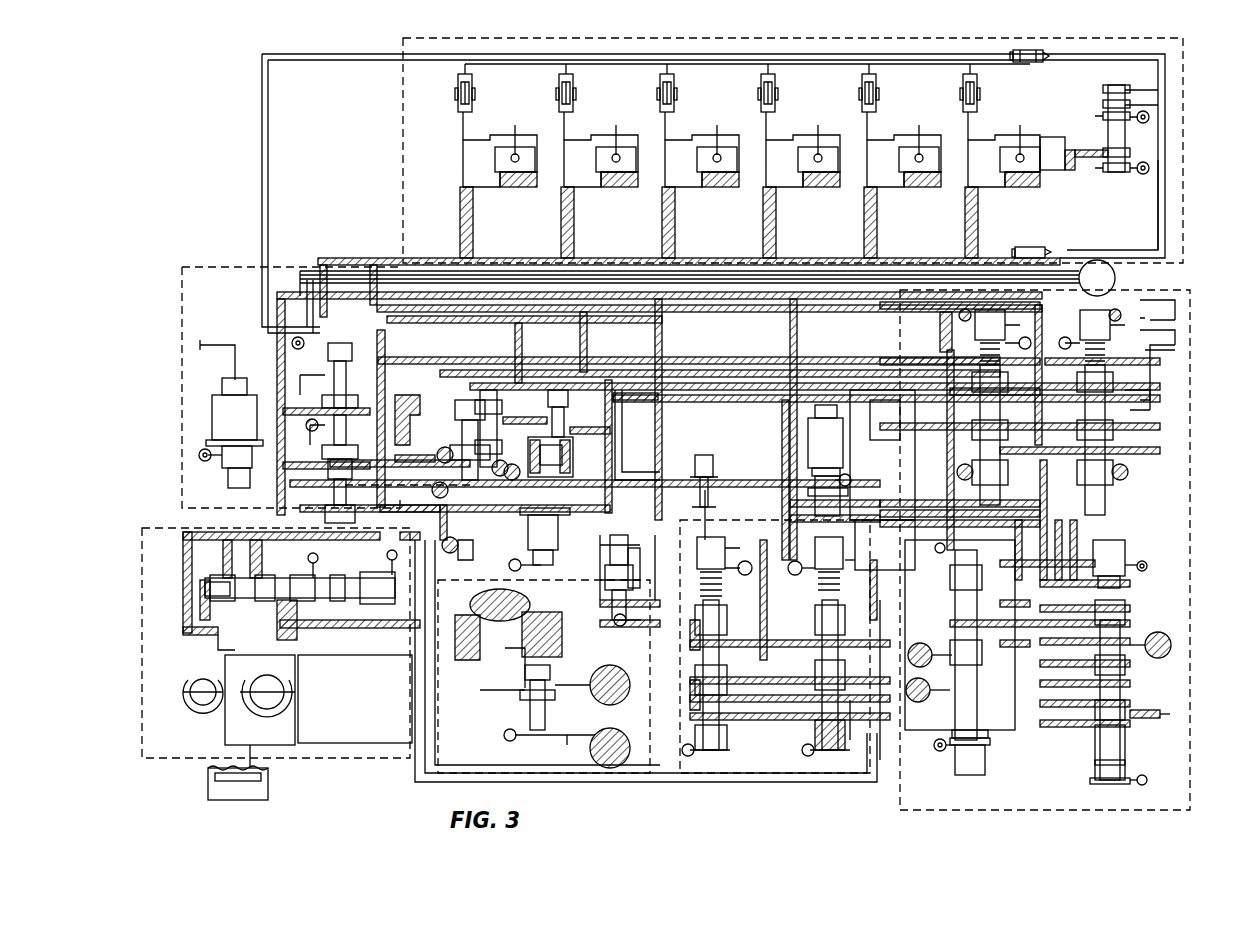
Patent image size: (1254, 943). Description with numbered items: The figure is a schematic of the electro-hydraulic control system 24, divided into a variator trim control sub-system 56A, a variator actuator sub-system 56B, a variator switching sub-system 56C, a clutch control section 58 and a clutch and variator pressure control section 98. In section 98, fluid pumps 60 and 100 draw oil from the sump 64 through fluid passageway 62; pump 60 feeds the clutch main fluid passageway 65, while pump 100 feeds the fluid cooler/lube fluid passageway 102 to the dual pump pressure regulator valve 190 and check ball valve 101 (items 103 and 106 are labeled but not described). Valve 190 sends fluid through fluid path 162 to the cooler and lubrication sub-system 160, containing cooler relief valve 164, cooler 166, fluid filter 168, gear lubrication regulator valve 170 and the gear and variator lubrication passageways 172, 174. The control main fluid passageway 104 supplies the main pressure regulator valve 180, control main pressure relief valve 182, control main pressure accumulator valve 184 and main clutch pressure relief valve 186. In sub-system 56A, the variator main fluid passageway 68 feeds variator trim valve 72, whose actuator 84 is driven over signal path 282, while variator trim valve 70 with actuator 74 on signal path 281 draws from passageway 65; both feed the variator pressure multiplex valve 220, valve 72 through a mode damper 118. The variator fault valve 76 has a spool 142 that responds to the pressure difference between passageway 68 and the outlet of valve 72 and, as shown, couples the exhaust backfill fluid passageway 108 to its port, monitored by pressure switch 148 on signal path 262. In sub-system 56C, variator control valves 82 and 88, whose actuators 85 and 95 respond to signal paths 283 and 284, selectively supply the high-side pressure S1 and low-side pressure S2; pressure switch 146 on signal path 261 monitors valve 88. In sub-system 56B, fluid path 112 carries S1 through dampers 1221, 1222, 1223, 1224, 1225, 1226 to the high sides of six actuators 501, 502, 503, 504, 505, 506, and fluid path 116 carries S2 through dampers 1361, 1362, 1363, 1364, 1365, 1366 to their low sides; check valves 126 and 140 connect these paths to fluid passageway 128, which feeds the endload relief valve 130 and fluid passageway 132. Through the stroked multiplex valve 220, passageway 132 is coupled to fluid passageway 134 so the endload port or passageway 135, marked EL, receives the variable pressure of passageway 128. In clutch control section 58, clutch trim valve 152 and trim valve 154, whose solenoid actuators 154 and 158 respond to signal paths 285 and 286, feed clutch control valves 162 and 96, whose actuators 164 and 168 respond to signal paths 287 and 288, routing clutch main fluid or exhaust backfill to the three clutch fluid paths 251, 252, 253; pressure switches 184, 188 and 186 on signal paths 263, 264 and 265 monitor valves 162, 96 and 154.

The electro-hydraulic control system 24 is at (215, 158).
The fluid path 112 is at (278, 60).
The variator high-side fluid passageway S1 is at (368, 68).
The variator low-side fluid passageway S2 is at (368, 244).
The variator actuator sub-system 56B is at (400, 122).
The variator trim control sub-system 56A is at (200, 267).
The variator switching sub-system 56C is at (716, 776).
The clutch control section 58 is at (900, 804).
The clutch and variator pressure control section 98 is at (355, 760).
The cooler and lubrication sub-system 160 is at (650, 775).
The damper 1221 is at (456, 105).
The damper 1222 is at (557, 105).
The damper 1223 is at (658, 105).
The damper 1224 is at (759, 105).
The damper 1225 is at (860, 105).
The damper 1226 is at (961, 105).
The variator actuator 501 is at (485, 160).
The variator actuator 502 is at (594, 160).
The variator actuator 503 is at (697, 160).
The variator actuator 504 is at (797, 160).
The variator actuator 505 is at (900, 160).
The variator actuator 506 is at (1000, 160).
The damper 1361 is at (456, 232).
The damper 1362 is at (555, 240).
The damper 1363 is at (656, 240).
The damper 1364 is at (757, 240).
The damper 1365 is at (858, 240).
The damper 1366 is at (959, 240).
The check valve 126 is at (1024, 62).
The check valve 140 is at (1024, 246).
The endload relief valve 130 is at (1104, 180).
The fluid passageway 128 is at (1154, 192).
The exhaust line EL is at (707, 278).
The endload port or passageway 135 is at (1116, 278).
The fluid passageway 134 is at (810, 294).
The fluid path 116 is at (324, 262).
The fluid passageway 132 is at (298, 278).
The control main fluid passageway 104 is at (433, 361).
The exhaust backfill fluid passageway 108 is at (615, 502).
The variator trim valve 70 is at (200, 415).
The signal path 281 is at (208, 340).
The actuator 74 is at (260, 404).
The variator main fluid passageway 68 is at (273, 342).
The variator pressure multiplex valve 220 is at (326, 397).
The control main pressure accumulator valve 184 is at (431, 412).
The main clutch pressure relief valve 186 is at (437, 452).
The control main pressure relief valve 182 is at (491, 485).
The main pressure regulator valve 180 is at (570, 447).
The dual pump pressure regulator valve 190 is at (472, 540).
The valve 106 is at (522, 548).
The pressure switch 148 is at (645, 662).
The clutch main fluid passageway 65 is at (183, 631).
The check ball valve 101 is at (248, 630).
The passage 103 is at (280, 636).
The fluid cooler/lube fluid passageway 102 is at (288, 660).
The clutch control valve 162 is at (393, 632).
The fluid passageway 62 is at (322, 735).
The fluid pump 60 is at (200, 716).
The fluid pump 100 is at (253, 712).
The transmission sump 64 is at (268, 785).
The cooler 166 is at (495, 615).
The fluid filter 168 is at (522, 652).
The cooler relief valve 164 is at (463, 664).
The gear lubrication regulator valve 170 is at (520, 682).
The gear lubrication passageway 172 is at (588, 695).
The variator lubrication passageway 174 is at (565, 745).
The variator fault valve 76 is at (602, 624).
The spool 142 is at (620, 632).
The signal path 262 is at (630, 558).
The mode damper 118 is at (693, 469).
The actuator 85 is at (700, 499).
The actuator 84 is at (802, 436).
The variator trim valve 72 is at (813, 477).
The actuator 95 is at (810, 532).
The signal path 283 is at (727, 585).
The variator control valve 82 is at (728, 730).
The variator control valve 88 is at (812, 732).
The pressure switch 146 is at (850, 740).
The signal path 261 is at (885, 727).
The clutch trim valve 152 is at (935, 332).
The actuator 154 is at (935, 339).
The actuator 158 is at (1155, 317).
The signal path 285 is at (1005, 339).
The signal path 286 is at (1068, 329).
The signal path 265 is at (1147, 410).
The signal path 282 is at (883, 434).
The signal path 284 is at (890, 477).
The signal path 288 is at (1130, 543).
The clutch control valve 96 is at (1130, 614).
The clutch fluid path 252 is at (1170, 644).
The signal path 263 is at (935, 652).
The clutch fluid path 253 is at (923, 697).
The clutch fluid path 251 is at (929, 739).
The signal path 264 is at (1157, 710).
The pressure switch 188 is at (1128, 740).
The signal path 287 is at (920, 775).